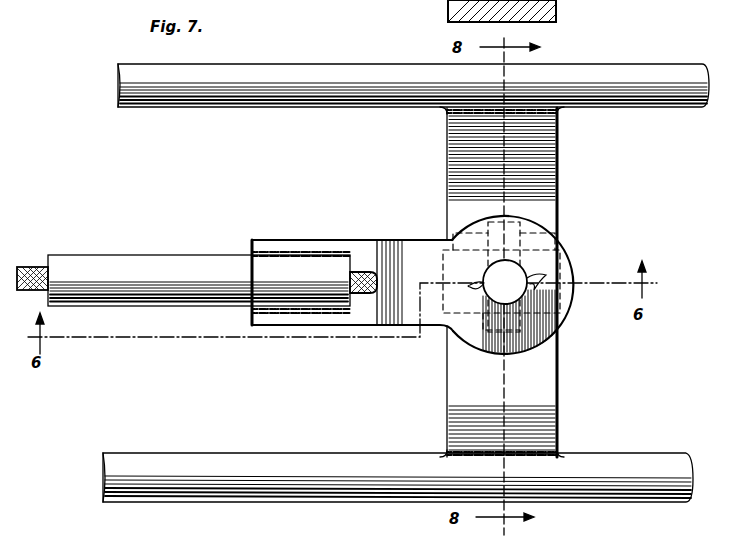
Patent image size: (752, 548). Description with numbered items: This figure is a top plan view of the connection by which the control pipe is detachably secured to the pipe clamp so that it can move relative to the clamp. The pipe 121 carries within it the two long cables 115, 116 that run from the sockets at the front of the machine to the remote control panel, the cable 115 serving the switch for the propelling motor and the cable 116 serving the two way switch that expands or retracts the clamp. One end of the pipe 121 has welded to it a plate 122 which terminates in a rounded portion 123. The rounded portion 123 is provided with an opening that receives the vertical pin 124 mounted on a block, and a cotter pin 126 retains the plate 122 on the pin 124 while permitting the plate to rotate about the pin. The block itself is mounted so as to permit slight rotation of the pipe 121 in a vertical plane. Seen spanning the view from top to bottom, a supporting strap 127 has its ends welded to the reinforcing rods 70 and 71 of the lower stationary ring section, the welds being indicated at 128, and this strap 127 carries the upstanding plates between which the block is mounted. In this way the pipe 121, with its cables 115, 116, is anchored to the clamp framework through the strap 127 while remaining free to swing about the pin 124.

The reinforcing rod 70 is at (600, 72).
The reinforcing rod 71 is at (632, 464).
The cable 115 is at (363, 305).
The cable 116 is at (368, 271).
The pipe 121 is at (187, 266).
The plate 122 is at (400, 252).
The rounded portion 123 is at (566, 264).
The vertical pin 124 is at (512, 281).
The cotter pin 126 is at (470, 285).
The supporting strap 127 is at (558, 9).
The welds 128 is at (559, 112).